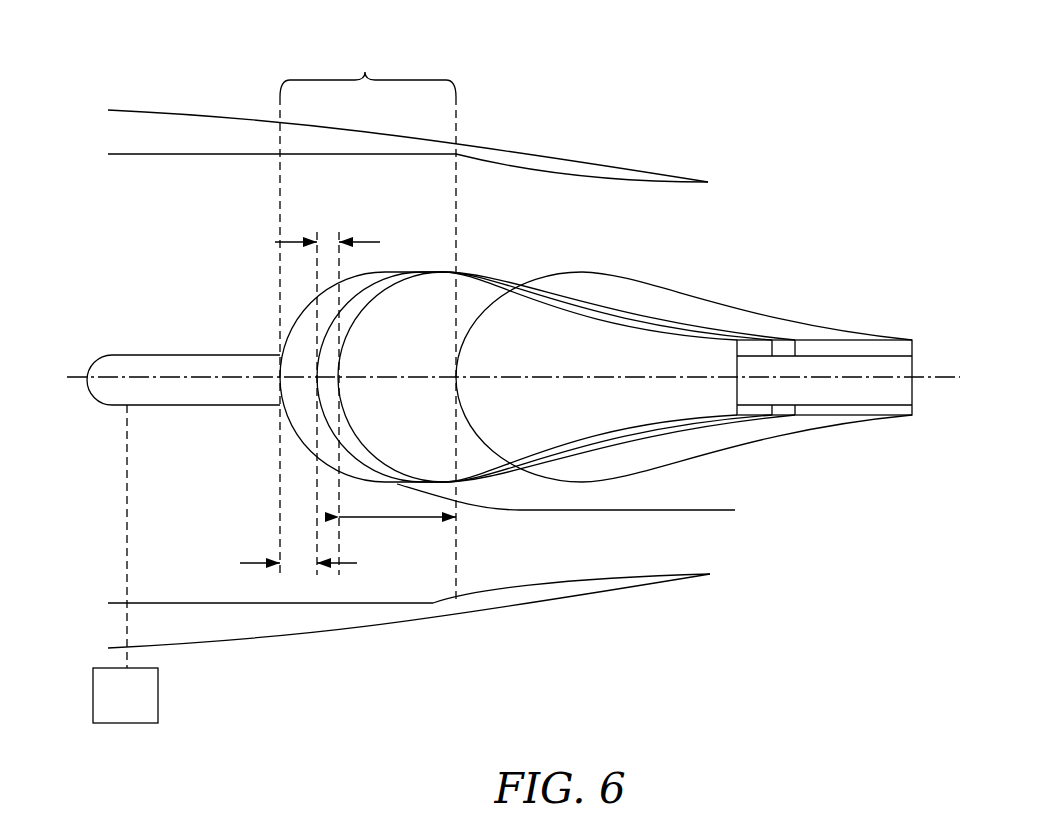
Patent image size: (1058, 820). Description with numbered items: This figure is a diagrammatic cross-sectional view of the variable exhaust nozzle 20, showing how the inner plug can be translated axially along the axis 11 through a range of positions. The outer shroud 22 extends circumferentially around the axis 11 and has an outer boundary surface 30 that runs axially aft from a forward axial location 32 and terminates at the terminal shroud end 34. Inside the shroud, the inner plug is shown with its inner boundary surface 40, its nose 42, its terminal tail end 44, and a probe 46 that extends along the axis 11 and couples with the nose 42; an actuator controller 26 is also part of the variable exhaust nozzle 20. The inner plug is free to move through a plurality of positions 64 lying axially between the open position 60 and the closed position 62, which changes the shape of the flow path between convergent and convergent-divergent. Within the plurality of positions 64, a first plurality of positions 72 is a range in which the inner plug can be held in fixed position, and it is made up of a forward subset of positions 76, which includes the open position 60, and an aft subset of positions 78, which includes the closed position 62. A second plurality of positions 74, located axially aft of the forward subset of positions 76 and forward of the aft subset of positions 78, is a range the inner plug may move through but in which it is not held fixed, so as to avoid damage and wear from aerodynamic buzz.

The variable exhaust nozzle 20 is at (850, 90).
The outer shroud 22 is at (208, 150).
The forward axial location 32 is at (163, 152).
The plurality of positions 64 is at (368, 319).
The second plurality of positions 74 is at (328, 235).
The outer boundary surface 30 is at (463, 160).
The terminal shroud end 34 is at (712, 182).
The axis 11 is at (77, 378).
The nose 42 is at (278, 370).
The probe 46 is at (205, 405).
The open position 60 is at (248, 452).
The closed position 62 is at (760, 450).
The terminal tail end 44 is at (795, 340).
The inner boundary surface 40 is at (663, 470).
The aft subset of positions 78 is at (390, 527).
The forward subset of positions 76 is at (272, 568).
The first plurality of positions 72 is at (357, 697).
The actuator controller 26 is at (158, 690).